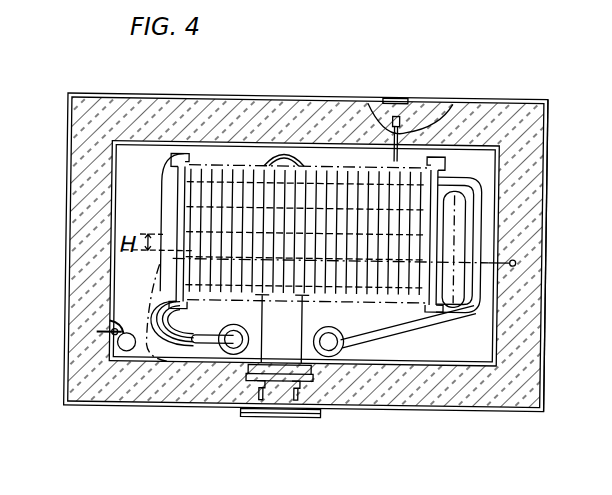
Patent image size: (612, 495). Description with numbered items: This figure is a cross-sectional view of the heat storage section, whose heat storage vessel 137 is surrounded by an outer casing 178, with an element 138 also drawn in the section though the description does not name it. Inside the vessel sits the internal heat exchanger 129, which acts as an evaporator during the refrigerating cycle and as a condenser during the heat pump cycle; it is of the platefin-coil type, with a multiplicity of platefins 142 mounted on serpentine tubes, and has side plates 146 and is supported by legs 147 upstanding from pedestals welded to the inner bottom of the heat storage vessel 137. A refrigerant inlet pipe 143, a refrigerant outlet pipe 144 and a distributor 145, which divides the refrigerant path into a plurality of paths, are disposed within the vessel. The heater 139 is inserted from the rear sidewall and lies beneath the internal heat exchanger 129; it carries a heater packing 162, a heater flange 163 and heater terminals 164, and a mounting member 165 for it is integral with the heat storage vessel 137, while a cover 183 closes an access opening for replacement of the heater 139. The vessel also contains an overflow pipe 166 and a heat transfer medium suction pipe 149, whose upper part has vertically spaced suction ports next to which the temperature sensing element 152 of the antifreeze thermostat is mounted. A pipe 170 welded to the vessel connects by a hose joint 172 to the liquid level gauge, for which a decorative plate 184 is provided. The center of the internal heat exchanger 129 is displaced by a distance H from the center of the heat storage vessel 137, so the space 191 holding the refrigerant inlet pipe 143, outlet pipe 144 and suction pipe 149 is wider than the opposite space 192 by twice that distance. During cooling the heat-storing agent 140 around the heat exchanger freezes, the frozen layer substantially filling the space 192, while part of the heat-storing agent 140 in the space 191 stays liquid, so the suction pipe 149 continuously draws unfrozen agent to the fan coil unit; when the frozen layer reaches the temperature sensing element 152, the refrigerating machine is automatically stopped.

The internal heat exchanger 129 is at (180, 186).
The heat storage vessel 137 is at (500, 272).
The insulation 138 is at (522, 332).
The heater 139 is at (345, 350).
The heat-storing agent 140 is at (490, 312).
The platefins 142 is at (322, 96).
The refrigerant inlet pipe 143 is at (236, 346).
The refrigerant outlet pipe 144 is at (483, 178).
The distributor 145 is at (165, 350).
The side plates 146 is at (470, 182).
The legs 147 is at (498, 96).
The heat transfer medium suction pipe 149 is at (124, 344).
The temperature sensing element 152 is at (115, 322).
The heater packing 162 is at (260, 394).
The heater flange 163 is at (302, 376).
The heater terminals 164 is at (268, 380).
The mounting member 165 is at (308, 378).
The overflow pipe 166 is at (518, 256).
The pipe 170 is at (453, 99).
The hose joint 172 is at (375, 96).
The outer casing 178 is at (190, 96).
The cover 183 is at (283, 416).
The decorative plate 184 is at (400, 93).
The space 191 is at (462, 378).
The space 192 is at (232, 150).